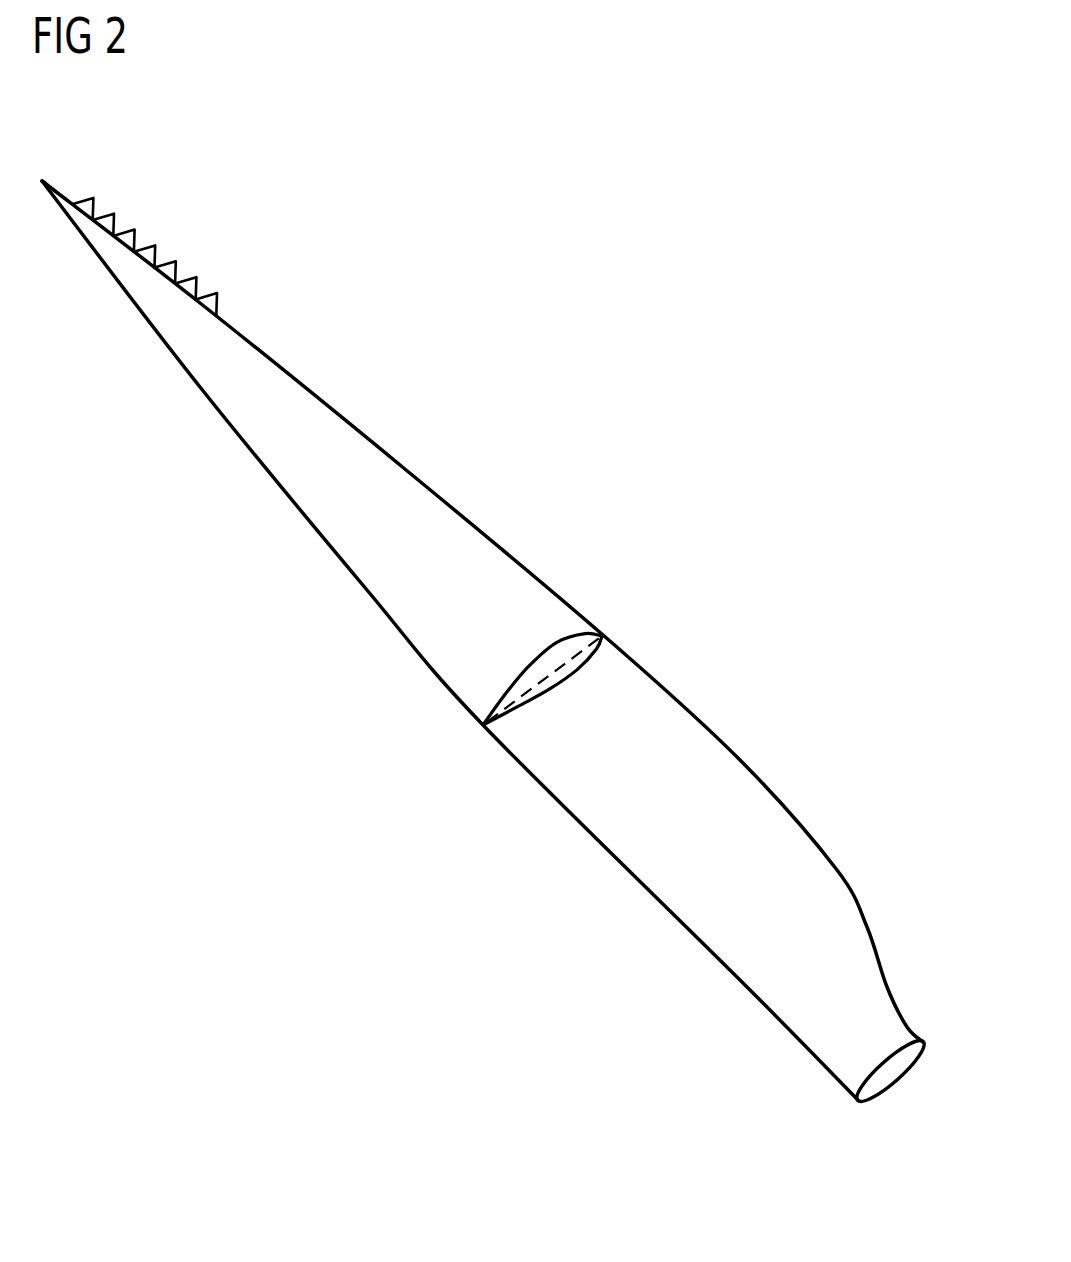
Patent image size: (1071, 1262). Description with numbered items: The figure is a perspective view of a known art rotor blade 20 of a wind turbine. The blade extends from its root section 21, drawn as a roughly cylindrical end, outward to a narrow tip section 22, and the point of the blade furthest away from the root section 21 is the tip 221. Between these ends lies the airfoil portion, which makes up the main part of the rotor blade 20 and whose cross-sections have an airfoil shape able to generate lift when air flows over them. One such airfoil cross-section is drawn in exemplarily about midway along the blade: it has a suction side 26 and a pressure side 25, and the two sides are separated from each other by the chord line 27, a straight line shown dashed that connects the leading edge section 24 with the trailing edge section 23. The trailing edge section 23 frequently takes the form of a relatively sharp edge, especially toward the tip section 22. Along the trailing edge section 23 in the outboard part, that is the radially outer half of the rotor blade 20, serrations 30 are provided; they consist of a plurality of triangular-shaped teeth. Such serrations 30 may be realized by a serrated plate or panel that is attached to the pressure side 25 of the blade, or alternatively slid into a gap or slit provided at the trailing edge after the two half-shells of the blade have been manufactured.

The rotor blade 20 is at (491, 605).
The root section 21 is at (892, 1027).
The tip section 22 is at (72, 209).
The tip 221 is at (42, 179).
The trailing edge section 23 is at (757, 776).
The leading edge section 24 is at (557, 812).
The pressure side 25 is at (572, 683).
The suction side 26 is at (540, 662).
The chord line 27 is at (507, 712).
The serrations 30 is at (153, 222).